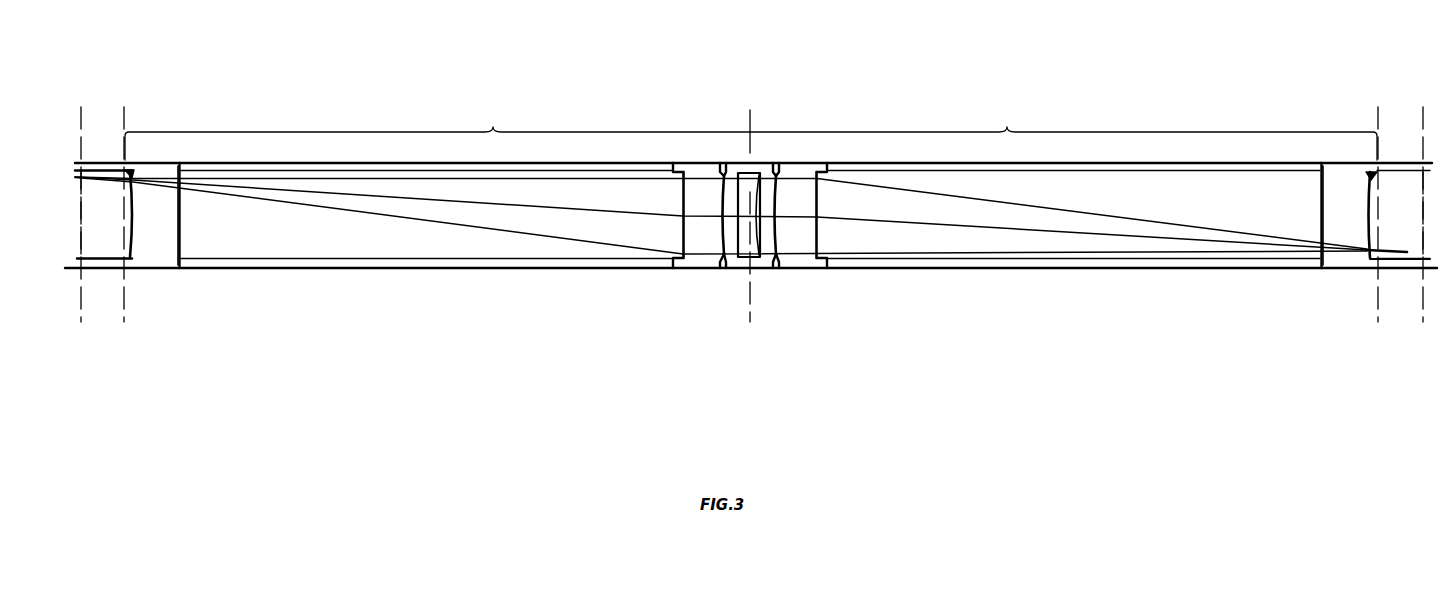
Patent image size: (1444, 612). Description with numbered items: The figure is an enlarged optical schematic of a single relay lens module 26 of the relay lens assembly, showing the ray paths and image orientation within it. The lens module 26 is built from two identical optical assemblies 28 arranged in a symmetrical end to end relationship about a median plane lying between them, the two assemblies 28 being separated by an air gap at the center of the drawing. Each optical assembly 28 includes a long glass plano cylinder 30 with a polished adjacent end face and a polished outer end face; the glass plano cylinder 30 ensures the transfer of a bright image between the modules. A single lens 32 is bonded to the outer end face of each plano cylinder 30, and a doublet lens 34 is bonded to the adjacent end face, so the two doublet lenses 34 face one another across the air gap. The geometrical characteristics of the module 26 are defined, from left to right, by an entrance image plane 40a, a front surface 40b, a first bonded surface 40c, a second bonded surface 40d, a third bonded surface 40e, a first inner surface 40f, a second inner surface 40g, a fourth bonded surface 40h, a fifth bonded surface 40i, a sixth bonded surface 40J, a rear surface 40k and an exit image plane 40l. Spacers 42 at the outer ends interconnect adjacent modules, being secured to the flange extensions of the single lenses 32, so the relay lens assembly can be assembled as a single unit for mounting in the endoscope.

The relay lens module 26 is at (901, 368).
The optical assembly 28 is at (751, 135).
The glass plano cylinder 30 is at (433, 247).
The single lens 32 is at (157, 253).
The doublet lens 34 is at (712, 277).
The entrance image plane 40a is at (78, 247).
The front surface 40b is at (130, 243).
The first bonded surface 40c is at (182, 212).
The second bonded surface 40d is at (683, 228).
The third bonded surface 40e is at (723, 203).
The first inner surface 40f is at (742, 235).
The second inner surface 40g is at (757, 203).
The fourth bonded surface 40h is at (776, 203).
The fifth bonded surface 40i is at (817, 235).
The sixth bonded surface 40J is at (1320, 213).
The rear surface 40k is at (1371, 180).
The exit image plane 40l is at (1420, 238).
The spacer 42 is at (97, 160).